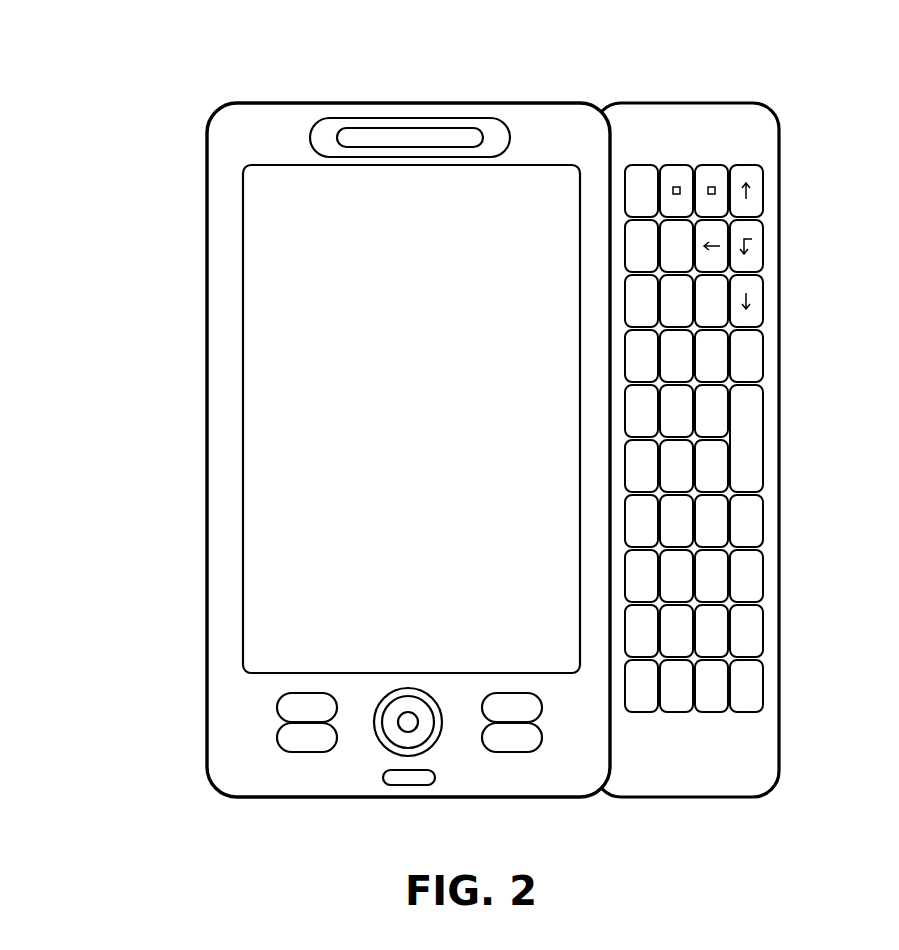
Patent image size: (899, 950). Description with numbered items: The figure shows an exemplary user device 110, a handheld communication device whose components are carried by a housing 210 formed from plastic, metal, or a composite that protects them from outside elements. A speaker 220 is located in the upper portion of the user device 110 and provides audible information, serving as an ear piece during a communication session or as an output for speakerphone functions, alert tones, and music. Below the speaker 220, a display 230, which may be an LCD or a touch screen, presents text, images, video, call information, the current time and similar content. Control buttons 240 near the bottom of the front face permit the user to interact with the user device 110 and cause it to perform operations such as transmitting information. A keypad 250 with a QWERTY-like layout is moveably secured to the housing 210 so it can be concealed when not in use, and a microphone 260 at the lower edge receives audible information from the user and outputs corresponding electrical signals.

The user device 110 is at (183, 62).
The housing 210 is at (207, 237).
The speaker 220 is at (311, 137).
The display 230 is at (263, 288).
The control buttons 240 is at (250, 740).
The keypad 250 is at (750, 392).
The microphone 260 is at (412, 783).